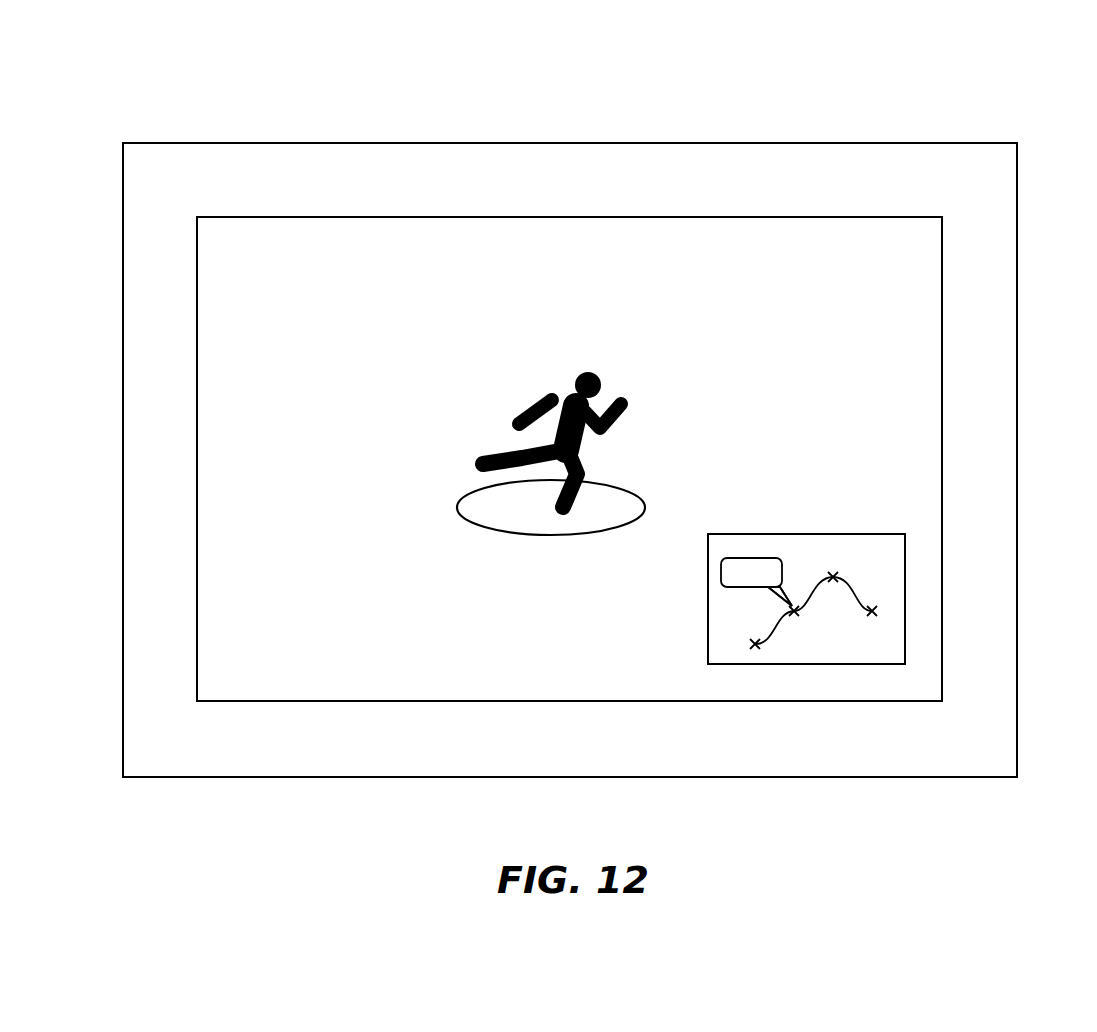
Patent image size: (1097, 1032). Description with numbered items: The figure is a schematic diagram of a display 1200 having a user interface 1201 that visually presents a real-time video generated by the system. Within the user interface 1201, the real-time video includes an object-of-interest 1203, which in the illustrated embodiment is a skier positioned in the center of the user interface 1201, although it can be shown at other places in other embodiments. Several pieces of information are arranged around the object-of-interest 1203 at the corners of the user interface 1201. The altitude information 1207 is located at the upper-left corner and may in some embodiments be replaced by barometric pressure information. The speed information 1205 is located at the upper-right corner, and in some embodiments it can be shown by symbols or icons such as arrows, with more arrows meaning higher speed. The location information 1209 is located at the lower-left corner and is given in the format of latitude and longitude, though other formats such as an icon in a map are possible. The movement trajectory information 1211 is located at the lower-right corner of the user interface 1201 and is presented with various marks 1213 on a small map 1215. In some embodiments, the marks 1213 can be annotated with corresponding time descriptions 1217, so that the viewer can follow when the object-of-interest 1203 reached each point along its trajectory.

The display 1200 is at (131, 125).
The user interface 1201 is at (330, 213).
The object-of-interest 1203 is at (634, 390).
The speed information 1205 is at (915, 251).
The altitude information 1207 is at (220, 252).
The location information 1209 is at (222, 661).
The movement trajectory information 1211 is at (871, 530).
The marks 1213 is at (795, 621).
The small map 1215 is at (886, 640).
The time descriptions 1217 is at (758, 551).